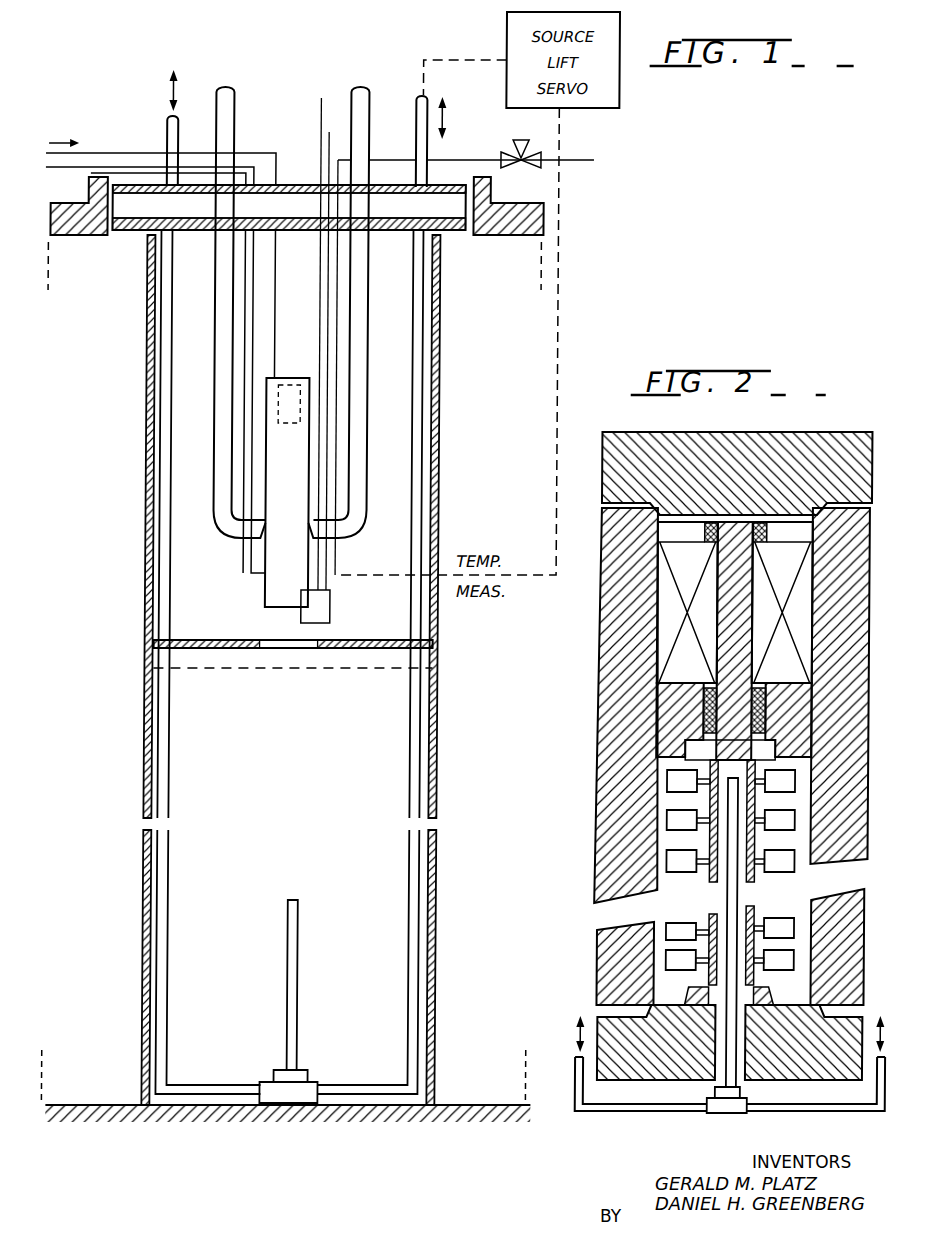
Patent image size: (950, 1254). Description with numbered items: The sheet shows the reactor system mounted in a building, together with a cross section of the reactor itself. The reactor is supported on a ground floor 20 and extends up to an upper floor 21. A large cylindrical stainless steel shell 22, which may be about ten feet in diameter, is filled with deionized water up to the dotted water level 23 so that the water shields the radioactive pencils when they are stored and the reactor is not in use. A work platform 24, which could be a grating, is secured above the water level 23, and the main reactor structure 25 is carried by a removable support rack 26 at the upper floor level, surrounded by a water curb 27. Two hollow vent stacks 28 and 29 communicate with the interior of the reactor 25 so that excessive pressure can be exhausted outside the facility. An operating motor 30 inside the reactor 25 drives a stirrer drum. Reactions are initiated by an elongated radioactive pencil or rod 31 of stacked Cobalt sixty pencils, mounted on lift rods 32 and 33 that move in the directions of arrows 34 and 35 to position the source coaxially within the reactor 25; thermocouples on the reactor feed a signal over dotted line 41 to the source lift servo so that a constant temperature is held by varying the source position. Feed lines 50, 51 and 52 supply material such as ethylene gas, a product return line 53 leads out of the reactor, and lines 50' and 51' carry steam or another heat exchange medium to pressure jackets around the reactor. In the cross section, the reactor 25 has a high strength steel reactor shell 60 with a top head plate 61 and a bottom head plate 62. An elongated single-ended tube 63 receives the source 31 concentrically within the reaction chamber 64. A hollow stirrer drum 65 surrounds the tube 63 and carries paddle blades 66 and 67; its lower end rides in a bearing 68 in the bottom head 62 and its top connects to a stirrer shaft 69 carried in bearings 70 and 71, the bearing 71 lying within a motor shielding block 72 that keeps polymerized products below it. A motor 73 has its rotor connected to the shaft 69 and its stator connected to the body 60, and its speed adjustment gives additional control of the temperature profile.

In FIG. 1, the ground floor 20 is at (77, 1103).
In FIG. 1, the upper floor 21 is at (107, 237).
In FIG. 1, the stainless steel shell 22 is at (442, 800).
In FIG. 1, the water level 23 is at (232, 668).
In FIG. 1, the work platform 24 is at (218, 639).
In FIG. 1, the main reactor structure 25 is at (300, 516).
In FIG. 2, the main reactor structure 25 is at (597, 747).
In FIG. 1, the removable support rack 26 is at (198, 215).
In FIG. 1, the water curb 27 is at (109, 183).
In FIG. 1, the vent stack 28 is at (217, 440).
In FIG. 1, the vent stack 29 is at (368, 396).
In FIG. 1, the operating motor 30 is at (298, 417).
In FIG. 1, the radioactive pencil or rod 31 is at (300, 978).
In FIG. 2, the radioactive pencil or rod 31 is at (738, 906).
In FIG. 1, the lift rod 32 is at (176, 906).
In FIG. 2, the lift rod 32 is at (577, 1087).
In FIG. 1, the lift rod 33 is at (410, 905).
In FIG. 2, the lift rod 33 is at (890, 1062).
In FIG. 1, the arrow 34 is at (168, 94).
In FIG. 1, the arrow 35 is at (444, 119).
In FIG. 1, the dotted line 41 is at (557, 362).
In FIG. 1, the feed line 50 is at (155, 370).
In FIG. 1, the feed line 51 is at (158, 244).
In FIG. 1, the feed line 52 is at (100, 175).
In FIG. 1, the product return line 53 is at (336, 262).
In FIG. 1, the line 50' is at (290, 344).
In FIG. 1, the line 51' is at (305, 361).
In FIG. 2, the reactor shell 60 is at (606, 665).
In FIG. 2, the top head plate 61 is at (872, 458).
In FIG. 2, the bottom head plate 62 is at (590, 1013).
In FIG. 2, the single-ended tube 63 is at (718, 1080).
In FIG. 2, the reaction chamber 64 is at (668, 860).
In FIG. 2, the stirrer drum 65 is at (703, 804).
In FIG. 2, the paddle blade 66 is at (668, 784).
In FIG. 2, the paddle blade 67 is at (668, 842).
In FIG. 2, the bearing 68 is at (776, 1001).
In FIG. 2, the stirrer shaft 69 is at (748, 632).
In FIG. 2, the bearing 70 is at (763, 528).
In FIG. 2, the bearing 71 is at (767, 696).
In FIG. 2, the motor shielding block 72 is at (680, 698).
In FIG. 2, the motor 73 is at (670, 625).